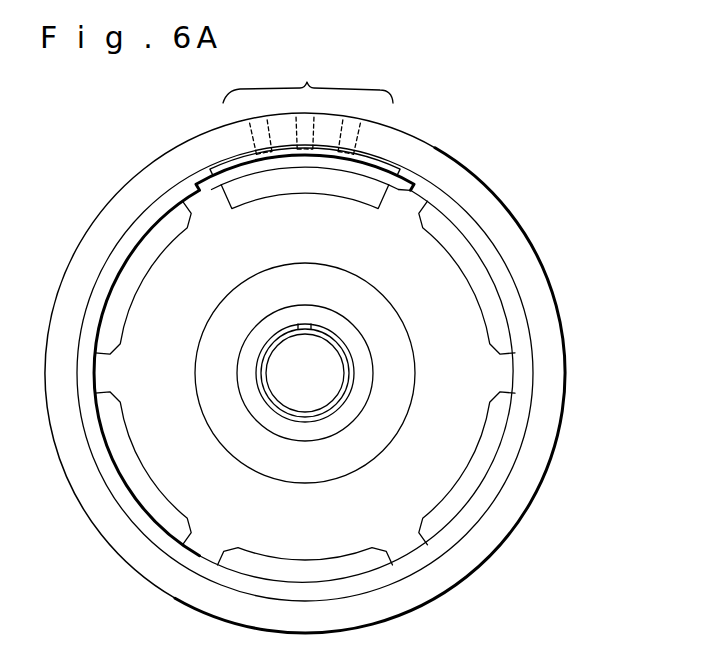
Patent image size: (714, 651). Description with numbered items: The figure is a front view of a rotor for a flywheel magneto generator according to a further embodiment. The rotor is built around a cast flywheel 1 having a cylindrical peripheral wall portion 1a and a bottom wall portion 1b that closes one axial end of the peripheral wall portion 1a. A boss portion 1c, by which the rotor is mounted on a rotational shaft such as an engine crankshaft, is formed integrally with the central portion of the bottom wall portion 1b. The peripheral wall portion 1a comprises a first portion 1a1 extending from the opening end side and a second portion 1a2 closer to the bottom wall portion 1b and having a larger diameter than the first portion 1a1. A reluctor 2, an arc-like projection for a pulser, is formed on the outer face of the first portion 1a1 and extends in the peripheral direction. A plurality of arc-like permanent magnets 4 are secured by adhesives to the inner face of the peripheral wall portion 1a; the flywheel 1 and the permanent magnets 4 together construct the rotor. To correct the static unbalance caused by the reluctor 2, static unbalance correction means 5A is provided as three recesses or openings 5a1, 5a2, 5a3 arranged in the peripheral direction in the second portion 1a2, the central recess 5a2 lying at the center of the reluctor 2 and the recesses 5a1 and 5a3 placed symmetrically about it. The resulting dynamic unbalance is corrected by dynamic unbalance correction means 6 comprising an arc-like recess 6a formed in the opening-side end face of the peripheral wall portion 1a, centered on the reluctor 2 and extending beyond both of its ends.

The flywheel 1 is at (617, 257).
The peripheral wall portion 1a is at (533, 288).
The first portion 1a1 is at (523, 445).
The second portion 1a2 is at (563, 408).
The bottom wall portion 1b is at (470, 368).
The boss portion 1c is at (243, 317).
The reluctor 2 is at (250, 147).
The permanent magnets 4 is at (267, 180).
The static unbalance correction means 5A is at (308, 79).
The recess 5a1 is at (270, 132).
The central recess 5a2 is at (312, 130).
The recess 5a3 is at (353, 133).
The dynamic unbalance correction means 6 is at (289, 175).
The arc-like recess 6a is at (407, 172).